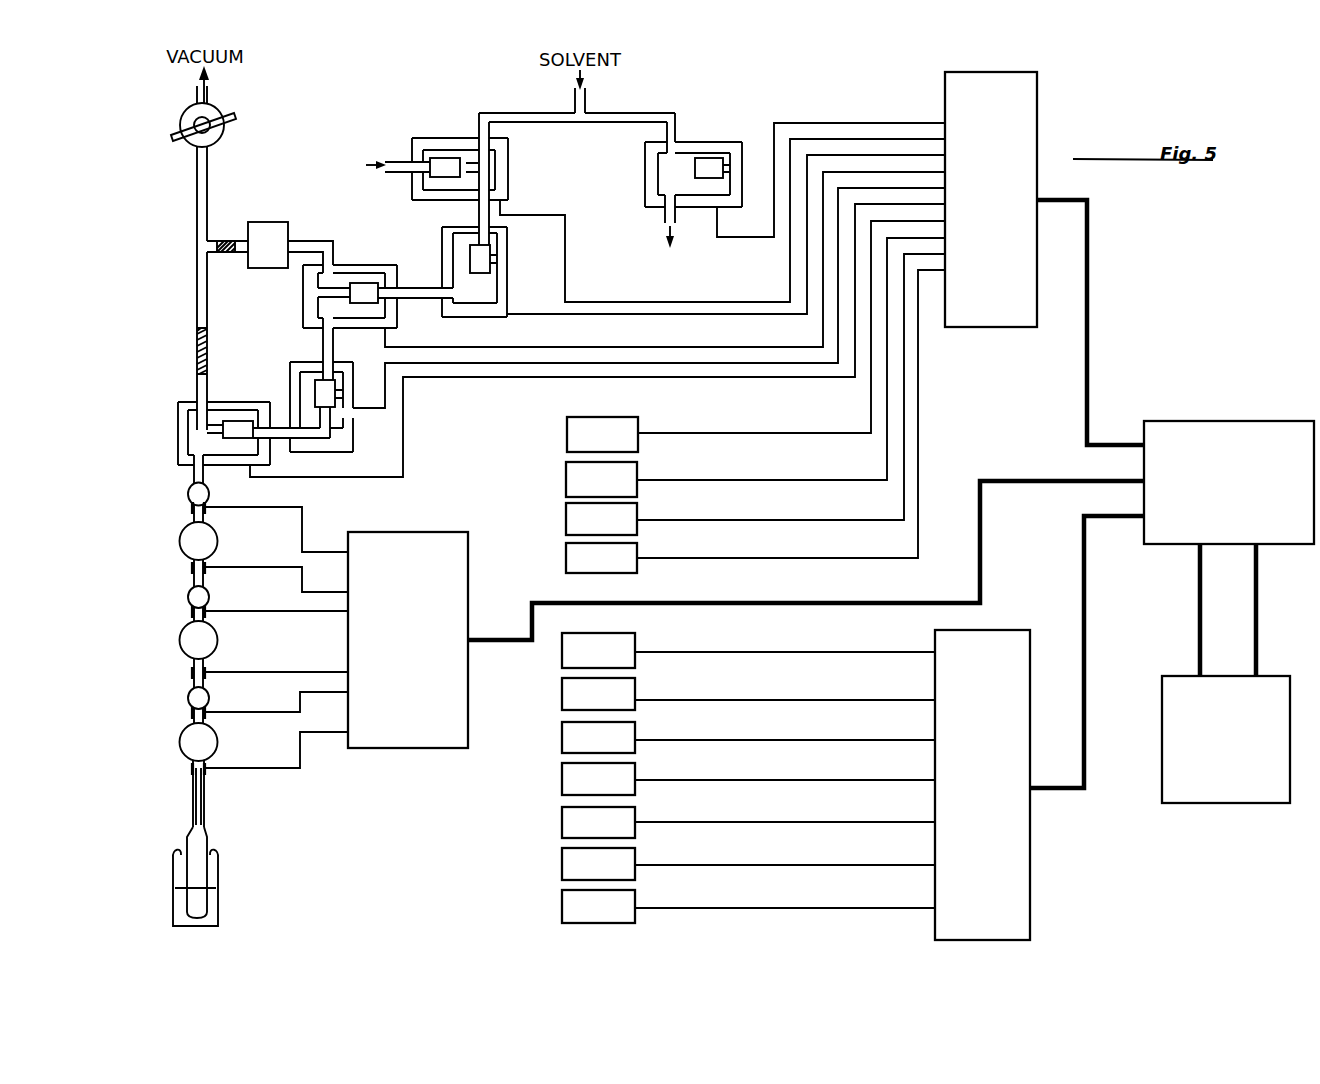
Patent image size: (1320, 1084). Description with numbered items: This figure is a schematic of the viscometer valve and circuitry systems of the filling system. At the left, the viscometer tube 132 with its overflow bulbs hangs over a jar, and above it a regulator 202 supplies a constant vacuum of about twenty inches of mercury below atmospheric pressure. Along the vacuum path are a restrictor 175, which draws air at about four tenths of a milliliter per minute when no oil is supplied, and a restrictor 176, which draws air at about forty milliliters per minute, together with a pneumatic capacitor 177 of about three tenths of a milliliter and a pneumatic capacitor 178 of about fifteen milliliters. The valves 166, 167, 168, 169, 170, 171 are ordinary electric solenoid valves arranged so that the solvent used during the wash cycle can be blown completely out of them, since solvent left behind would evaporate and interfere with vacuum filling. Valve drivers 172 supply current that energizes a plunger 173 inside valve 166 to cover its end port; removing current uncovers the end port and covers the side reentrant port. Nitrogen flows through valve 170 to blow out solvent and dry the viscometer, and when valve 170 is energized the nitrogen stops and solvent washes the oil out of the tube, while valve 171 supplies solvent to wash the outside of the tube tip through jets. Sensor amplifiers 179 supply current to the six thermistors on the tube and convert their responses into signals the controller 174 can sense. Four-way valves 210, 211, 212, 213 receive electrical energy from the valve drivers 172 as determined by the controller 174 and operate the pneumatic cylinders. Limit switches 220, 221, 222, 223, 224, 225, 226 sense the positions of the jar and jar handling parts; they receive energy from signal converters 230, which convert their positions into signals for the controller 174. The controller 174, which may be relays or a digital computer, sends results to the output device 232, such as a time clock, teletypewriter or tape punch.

The siphon tube with bulbs and sensor positions 132 is at (186, 580).
The valve 166 is at (177, 426).
The valve 167 is at (290, 371).
The valve 168 is at (303, 288).
The valve 169 is at (507, 238).
The valve 170 is at (412, 188).
The valve 171 is at (645, 160).
The valve drivers 172 is at (1031, 110).
The plunger 173 is at (231, 421).
The controller 174 is at (1215, 420).
The restrictor 175 is at (196, 337).
The restrictor 176 is at (226, 239).
The pneumatic capacitor 177 is at (197, 383).
The pneumatic capacitor 178 is at (271, 221).
The sensor amplifiers 179 is at (413, 749).
The regulator 202 is at (181, 118).
The valve 210 is at (567, 433).
The valve 211 is at (566, 478).
The valve 212 is at (566, 520).
The valve 213 is at (566, 556).
The limit switch 220 is at (562, 660).
The limit switch 221 is at (562, 688).
The limit switch 222 is at (562, 733).
The limit switch 223 is at (562, 768).
The limit switch 224 is at (562, 813).
The limit switch 225 is at (562, 862).
The limit switch 226 is at (562, 900).
The signal converters 230 is at (1003, 634).
The output device 232 is at (1166, 686).